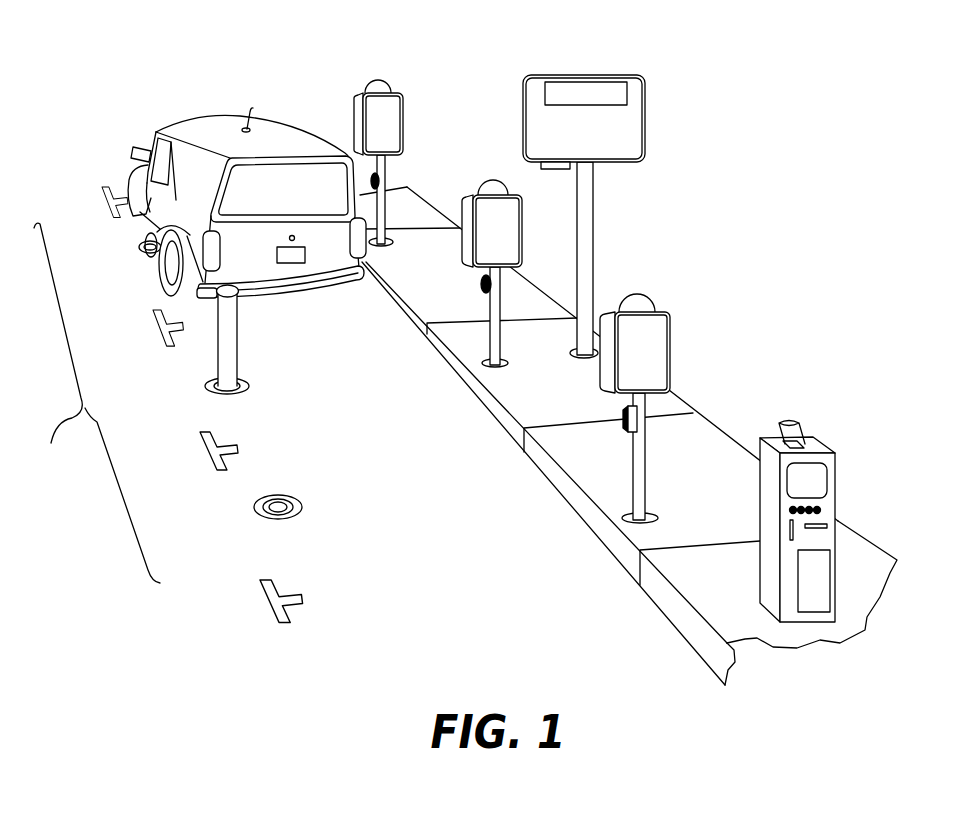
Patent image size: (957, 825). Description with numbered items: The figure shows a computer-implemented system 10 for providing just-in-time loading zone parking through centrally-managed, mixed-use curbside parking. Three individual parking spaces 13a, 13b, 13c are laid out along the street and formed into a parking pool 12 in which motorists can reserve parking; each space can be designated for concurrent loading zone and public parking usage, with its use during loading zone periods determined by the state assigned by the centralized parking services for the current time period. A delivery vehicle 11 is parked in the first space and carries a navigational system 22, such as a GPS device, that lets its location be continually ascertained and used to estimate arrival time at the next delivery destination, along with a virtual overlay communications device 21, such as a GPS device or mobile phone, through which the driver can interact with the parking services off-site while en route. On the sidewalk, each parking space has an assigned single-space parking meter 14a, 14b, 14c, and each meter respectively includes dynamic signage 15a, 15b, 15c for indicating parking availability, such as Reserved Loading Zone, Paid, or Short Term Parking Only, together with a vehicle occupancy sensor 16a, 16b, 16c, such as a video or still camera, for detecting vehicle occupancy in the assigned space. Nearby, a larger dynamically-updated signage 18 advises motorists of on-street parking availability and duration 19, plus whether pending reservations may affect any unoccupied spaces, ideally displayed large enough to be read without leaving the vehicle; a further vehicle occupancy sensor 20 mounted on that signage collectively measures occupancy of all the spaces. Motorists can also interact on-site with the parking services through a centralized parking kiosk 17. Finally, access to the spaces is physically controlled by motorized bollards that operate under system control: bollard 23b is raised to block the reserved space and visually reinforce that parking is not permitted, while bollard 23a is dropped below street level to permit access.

The computer-implemented system 10 is at (150, 52).
The vehicle 11 is at (308, 292).
The parking pool 12 is at (97, 403).
The parking space 13a is at (148, 273).
The parking space 13b is at (226, 405).
The parking space 13c is at (290, 545).
The single-space parking meter 14a is at (646, 447).
The single-space parking meter 14b is at (502, 337).
The single-space parking meter 14c is at (392, 172).
The dynamic signage 15a is at (675, 331).
The dynamic signage 15b is at (527, 232).
The dynamic signage 15c is at (412, 113).
The vehicle occupancy sensor 16a is at (620, 412).
The vehicle occupancy sensor 16b is at (478, 288).
The vehicle occupancy sensor 16c is at (371, 184).
The centralized parking kiosk 17 is at (760, 483).
The dynamically-updated signage 18 is at (647, 122).
The parking availability and duration 19 is at (640, 138).
The vehicle occupancy sensor 20 is at (560, 177).
The virtual overlay communications device 21 is at (258, 96).
The navigational system 22 is at (125, 145).
The bollard 23a is at (146, 246).
The bollard 23b is at (243, 350).